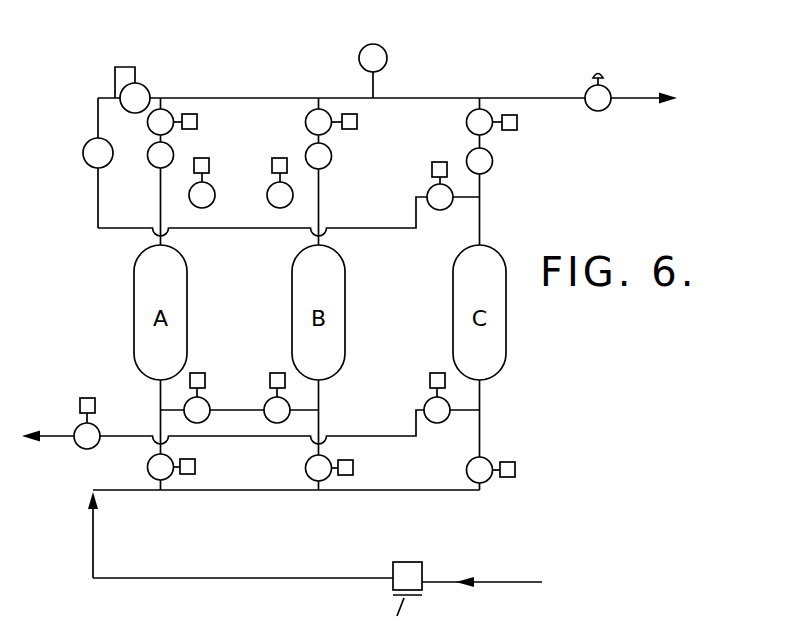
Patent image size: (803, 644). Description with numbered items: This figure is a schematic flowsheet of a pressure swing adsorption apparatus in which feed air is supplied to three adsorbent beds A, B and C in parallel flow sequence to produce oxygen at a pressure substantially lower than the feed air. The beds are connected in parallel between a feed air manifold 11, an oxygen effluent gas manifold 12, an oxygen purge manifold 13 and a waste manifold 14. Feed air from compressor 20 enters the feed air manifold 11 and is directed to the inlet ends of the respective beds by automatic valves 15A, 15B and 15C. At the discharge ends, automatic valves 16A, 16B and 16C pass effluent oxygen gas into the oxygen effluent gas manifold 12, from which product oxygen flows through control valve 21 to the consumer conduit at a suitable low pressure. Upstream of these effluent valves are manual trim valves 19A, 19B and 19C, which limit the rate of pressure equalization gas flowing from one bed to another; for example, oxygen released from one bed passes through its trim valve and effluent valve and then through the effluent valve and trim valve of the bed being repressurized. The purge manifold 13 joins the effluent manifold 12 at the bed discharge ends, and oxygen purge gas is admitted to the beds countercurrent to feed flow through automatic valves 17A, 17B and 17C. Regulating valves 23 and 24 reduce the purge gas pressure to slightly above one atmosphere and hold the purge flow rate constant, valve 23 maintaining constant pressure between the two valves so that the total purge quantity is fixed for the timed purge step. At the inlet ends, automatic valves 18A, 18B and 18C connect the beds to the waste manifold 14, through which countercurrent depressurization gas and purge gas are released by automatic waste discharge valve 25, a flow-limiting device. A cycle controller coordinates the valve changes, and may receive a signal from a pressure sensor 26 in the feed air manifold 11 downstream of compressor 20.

The feed air manifold 11 is at (207, 492).
The oxygen effluent gas manifold 12 is at (250, 98).
The oxygen purge manifold 13 is at (365, 230).
The waste manifold 14 is at (358, 436).
The automatic valve 15A is at (170, 477).
The automatic valve 15B is at (328, 477).
The automatic valve 15C is at (492, 459).
The automatic valve 16A is at (174, 129).
The automatic valve 16B is at (305, 122).
The automatic valve 16C is at (466, 123).
The automatic valve 17A is at (211, 205).
The automatic valve 17B is at (289, 205).
The automatic valve 17C is at (440, 210).
The automatic valve 18A is at (205, 397).
The automatic valve 18B is at (267, 396).
The automatic valve 18C is at (425, 398).
The manual trim valve 19A is at (173, 152).
The manual trim valve 19B is at (307, 152).
The manual trim valve 19C is at (491, 170).
The compressor 20 is at (409, 566).
The control valve 21 is at (590, 116).
The regulating valve 23 is at (143, 84).
The regulating valve 24 is at (90, 144).
The automatic waste discharge valve 25 is at (76, 426).
The pressure switch 26 is at (384, 50).